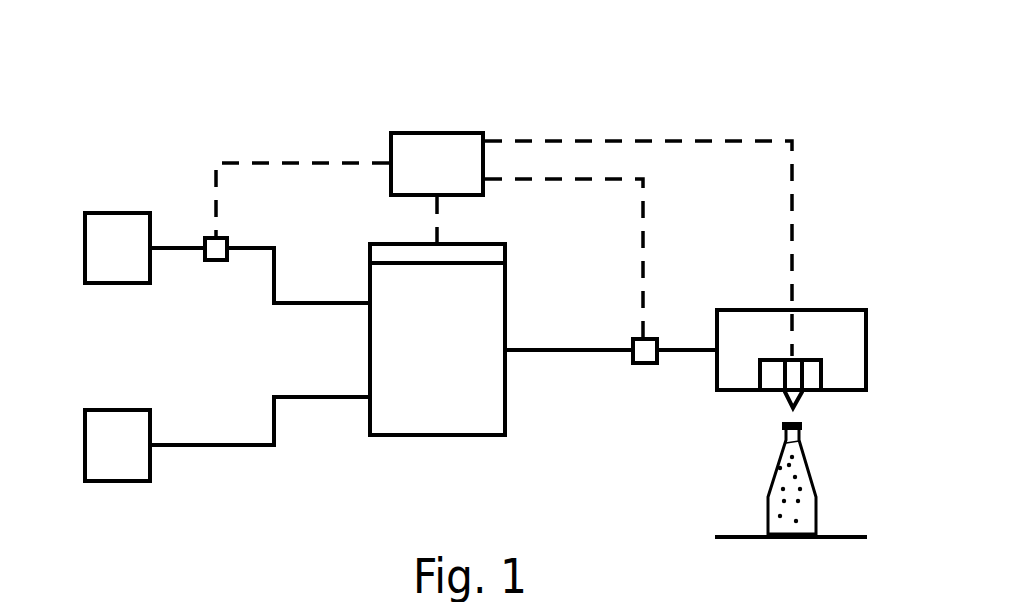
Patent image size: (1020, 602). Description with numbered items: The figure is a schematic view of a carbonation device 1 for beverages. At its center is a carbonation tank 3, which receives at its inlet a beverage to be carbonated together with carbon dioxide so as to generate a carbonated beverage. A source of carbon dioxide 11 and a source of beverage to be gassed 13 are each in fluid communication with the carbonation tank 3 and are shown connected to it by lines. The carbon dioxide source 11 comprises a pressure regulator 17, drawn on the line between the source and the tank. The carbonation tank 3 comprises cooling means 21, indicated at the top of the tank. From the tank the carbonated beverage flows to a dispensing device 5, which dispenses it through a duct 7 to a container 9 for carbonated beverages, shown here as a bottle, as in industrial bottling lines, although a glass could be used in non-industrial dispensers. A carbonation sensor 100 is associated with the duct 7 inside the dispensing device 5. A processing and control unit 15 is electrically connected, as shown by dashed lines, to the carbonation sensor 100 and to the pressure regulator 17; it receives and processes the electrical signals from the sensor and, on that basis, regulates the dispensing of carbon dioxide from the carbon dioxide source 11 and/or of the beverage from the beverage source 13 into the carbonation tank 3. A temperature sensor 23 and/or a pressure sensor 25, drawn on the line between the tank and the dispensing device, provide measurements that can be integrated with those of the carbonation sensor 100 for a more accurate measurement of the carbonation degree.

The carbonation device 1 is at (142, 108).
The carbonation tank 3 is at (449, 374).
The dispensing device 5 is at (788, 308).
The duct 7 is at (800, 376).
The container 9 is at (824, 505).
The source of carbon dioxide 11 is at (105, 203).
The source of beverage to be gassed 13 is at (106, 403).
The processing and control unit 15 is at (408, 126).
The pressure regulator 17 is at (243, 234).
The cooling means 21 is at (514, 253).
The temperature sensor 23 is at (641, 396).
The pressure sensor 25 is at (642, 372).
The carbonation sensor 100 is at (750, 357).